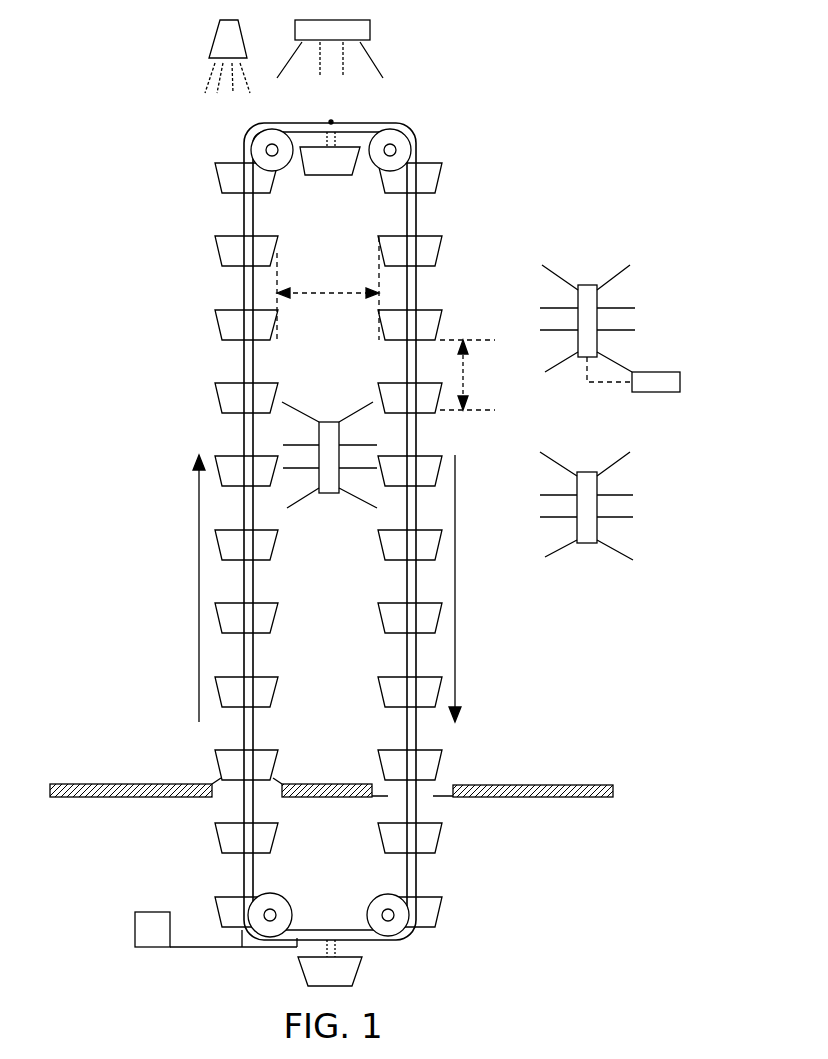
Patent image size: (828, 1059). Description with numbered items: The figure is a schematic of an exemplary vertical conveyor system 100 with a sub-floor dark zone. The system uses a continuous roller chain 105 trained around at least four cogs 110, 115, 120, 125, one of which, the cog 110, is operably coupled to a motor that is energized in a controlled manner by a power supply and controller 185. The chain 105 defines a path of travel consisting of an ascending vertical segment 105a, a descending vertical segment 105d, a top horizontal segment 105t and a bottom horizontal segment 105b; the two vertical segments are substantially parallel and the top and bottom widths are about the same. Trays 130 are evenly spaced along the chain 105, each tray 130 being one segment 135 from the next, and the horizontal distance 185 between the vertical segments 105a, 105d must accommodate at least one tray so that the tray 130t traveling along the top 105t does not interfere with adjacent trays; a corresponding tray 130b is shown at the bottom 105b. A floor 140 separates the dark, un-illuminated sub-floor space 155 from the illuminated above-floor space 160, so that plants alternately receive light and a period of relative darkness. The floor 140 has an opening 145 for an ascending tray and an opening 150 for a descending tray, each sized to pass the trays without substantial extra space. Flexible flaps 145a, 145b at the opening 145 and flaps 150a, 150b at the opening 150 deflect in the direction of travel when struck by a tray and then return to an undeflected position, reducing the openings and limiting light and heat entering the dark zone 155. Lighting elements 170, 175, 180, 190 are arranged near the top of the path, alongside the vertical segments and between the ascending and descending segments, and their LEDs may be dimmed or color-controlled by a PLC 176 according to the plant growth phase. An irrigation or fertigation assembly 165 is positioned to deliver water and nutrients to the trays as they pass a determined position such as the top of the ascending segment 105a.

The vertical conveyor system 100 is at (197, 302).
The chain 105 is at (245, 363).
The ascending vertical segment 105a is at (193, 580).
The descending vertical segment 105d is at (455, 572).
The top horizontal segment 105t is at (300, 121).
The bottom horizontal segment 105b is at (358, 942).
The cog 110 is at (282, 888).
The cog 115 is at (258, 145).
The cog 120 is at (400, 137).
The cog 125 is at (392, 928).
The tray 130 is at (437, 313).
The tray traveling along the top 130t is at (340, 168).
The bottom plant container 130b is at (318, 978).
The segment 135 is at (463, 375).
The floor 140 is at (130, 792).
The opening for an ascending tray 145 is at (222, 792).
The flexible flap 145a is at (215, 777).
The flexible flap 145b is at (278, 777).
The opening for a descending tray 150 is at (418, 795).
The flexible flap 150a is at (385, 799).
The flexible flap 150b is at (437, 797).
The sub-floor space 155 is at (150, 878).
The above-floor space 160 is at (130, 735).
The irrigation and/or fertigation assembly 165 is at (217, 47).
The lighting element 170 is at (360, 27).
The lighting element 175 is at (586, 285).
The PLC 176 is at (633, 374).
The lighting element 180 is at (585, 480).
The power supply and controller 185 is at (348, 293).
The lighting element 190 is at (326, 430).